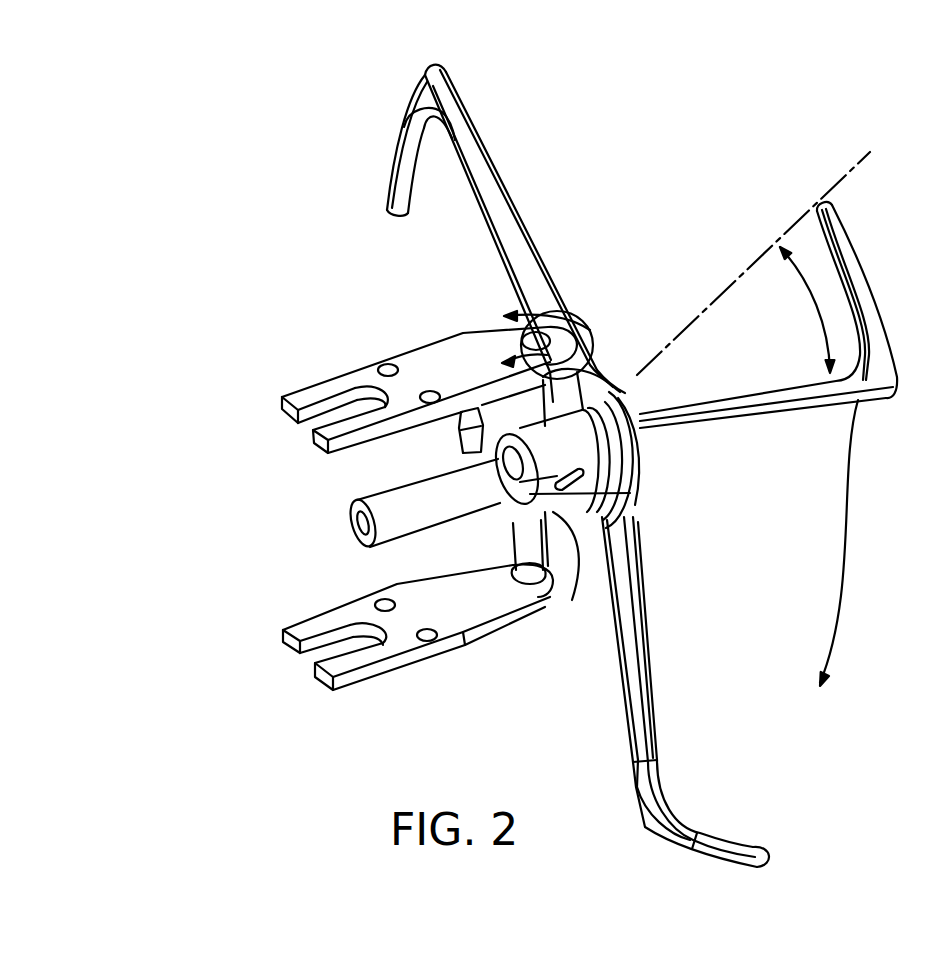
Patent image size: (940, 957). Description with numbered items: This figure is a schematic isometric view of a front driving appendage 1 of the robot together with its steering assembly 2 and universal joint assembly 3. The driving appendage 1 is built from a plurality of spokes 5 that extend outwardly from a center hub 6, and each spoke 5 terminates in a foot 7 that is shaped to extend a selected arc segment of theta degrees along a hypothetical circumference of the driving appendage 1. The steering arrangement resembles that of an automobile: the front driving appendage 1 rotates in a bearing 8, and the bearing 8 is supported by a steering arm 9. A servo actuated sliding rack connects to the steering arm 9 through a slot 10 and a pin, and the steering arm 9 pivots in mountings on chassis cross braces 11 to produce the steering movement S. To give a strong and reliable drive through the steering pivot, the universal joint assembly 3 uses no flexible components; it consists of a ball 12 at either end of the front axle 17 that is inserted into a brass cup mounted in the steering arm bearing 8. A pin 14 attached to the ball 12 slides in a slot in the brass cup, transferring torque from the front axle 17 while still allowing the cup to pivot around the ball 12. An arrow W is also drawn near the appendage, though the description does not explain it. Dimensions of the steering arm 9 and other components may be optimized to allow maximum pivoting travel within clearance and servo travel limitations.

The driving appendage 1 is at (512, 206).
The steering assembly 2 is at (528, 622).
The universal joint assembly 3 is at (487, 515).
The spoke 5 is at (660, 745).
The center hub 6 is at (647, 473).
The foot 7 is at (390, 168).
The bearing 8 is at (553, 512).
The steering arm 9 is at (468, 432).
The slot 10 is at (469, 406).
The chassis cross brace 11 is at (323, 380).
The ball 12 is at (593, 503).
The pin 14 is at (557, 487).
The front axle 17 is at (352, 515).
The steering movement S is at (582, 318).
The swing direction W is at (850, 543).